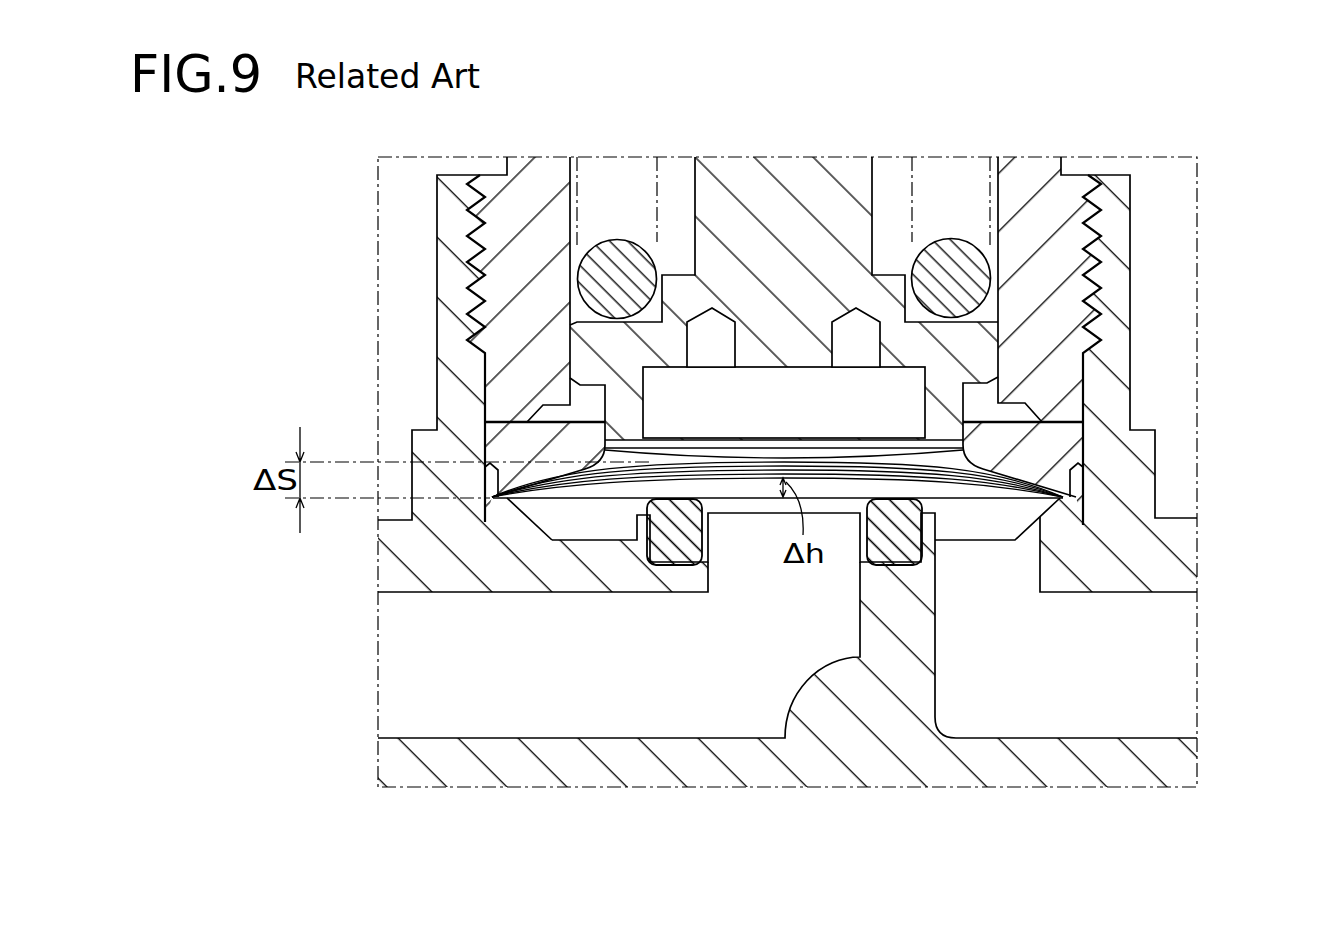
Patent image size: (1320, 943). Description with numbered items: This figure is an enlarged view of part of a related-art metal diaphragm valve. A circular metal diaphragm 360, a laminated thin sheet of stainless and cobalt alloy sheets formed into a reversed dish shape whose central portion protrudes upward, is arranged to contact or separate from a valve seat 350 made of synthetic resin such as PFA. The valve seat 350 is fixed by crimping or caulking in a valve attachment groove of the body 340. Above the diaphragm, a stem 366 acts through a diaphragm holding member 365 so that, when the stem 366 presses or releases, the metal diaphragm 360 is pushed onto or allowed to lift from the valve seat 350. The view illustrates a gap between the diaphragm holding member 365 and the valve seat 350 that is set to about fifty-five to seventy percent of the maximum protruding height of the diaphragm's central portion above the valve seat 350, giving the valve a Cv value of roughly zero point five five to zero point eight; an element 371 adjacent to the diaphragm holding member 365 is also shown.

The body 340 is at (430, 553).
The valve seat 350 is at (660, 500).
The metal diaphragm 360 is at (960, 486).
The diaphragm holding member 365 is at (783, 462).
The stem 366 is at (785, 178).
The clamping nut 371 is at (1057, 445).